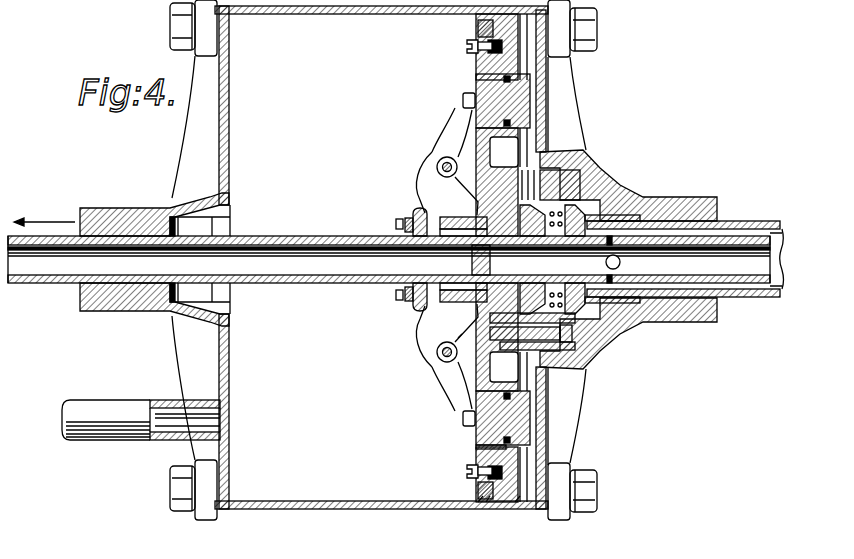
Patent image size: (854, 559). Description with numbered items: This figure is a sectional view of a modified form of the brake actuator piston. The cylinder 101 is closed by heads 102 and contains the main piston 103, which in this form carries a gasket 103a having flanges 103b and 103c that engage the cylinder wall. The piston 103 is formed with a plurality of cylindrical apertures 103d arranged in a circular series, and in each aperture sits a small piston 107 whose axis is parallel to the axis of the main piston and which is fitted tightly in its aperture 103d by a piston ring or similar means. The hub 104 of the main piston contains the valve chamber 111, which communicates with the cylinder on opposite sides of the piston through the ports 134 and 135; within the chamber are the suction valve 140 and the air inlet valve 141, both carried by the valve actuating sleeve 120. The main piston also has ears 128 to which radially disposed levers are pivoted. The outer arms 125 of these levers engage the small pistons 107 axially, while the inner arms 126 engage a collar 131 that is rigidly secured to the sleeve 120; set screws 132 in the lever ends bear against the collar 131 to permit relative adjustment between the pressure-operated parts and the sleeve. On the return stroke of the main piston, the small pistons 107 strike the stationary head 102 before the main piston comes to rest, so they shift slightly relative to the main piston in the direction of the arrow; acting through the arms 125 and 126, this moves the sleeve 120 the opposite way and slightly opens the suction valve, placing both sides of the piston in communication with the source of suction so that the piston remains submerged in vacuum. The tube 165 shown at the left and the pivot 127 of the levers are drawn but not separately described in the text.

The cylinder 101 is at (346, 17).
The head 102 is at (220, 130).
The piston 103 is at (477, 385).
The gasket 103a is at (488, 503).
The flange 103b is at (483, 502).
The flange 103c is at (520, 503).
The cylindrical aperture 103d is at (478, 449).
The hub 104 is at (473, 313).
The piston 107 is at (478, 82).
The valve chamber 111 is at (552, 352).
The valve actuating sleeve 120 is at (355, 268).
The arm 125 is at (448, 113).
The arm 126 is at (416, 192).
The pivot pin 127 is at (446, 165).
The ear 128 is at (458, 338).
The collar 131 is at (408, 218).
The set screw 132 is at (396, 225).
The port 134 is at (575, 155).
The port 135 is at (417, 213).
The suction valve 140 is at (515, 225).
The air inlet valve 141 is at (587, 200).
The tube 165 is at (115, 407).